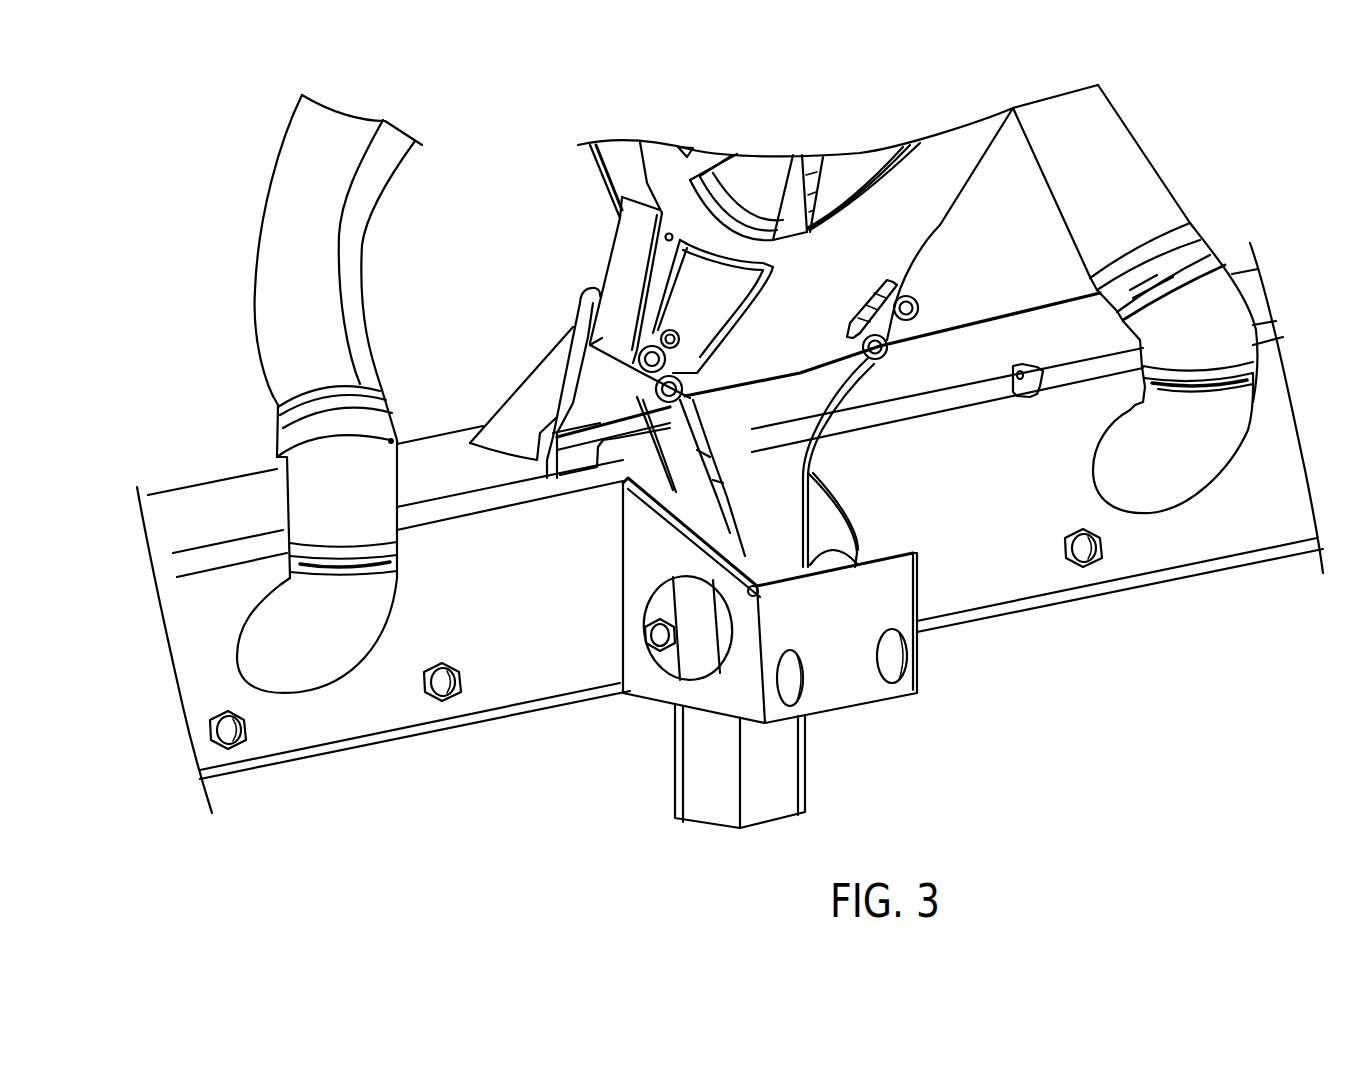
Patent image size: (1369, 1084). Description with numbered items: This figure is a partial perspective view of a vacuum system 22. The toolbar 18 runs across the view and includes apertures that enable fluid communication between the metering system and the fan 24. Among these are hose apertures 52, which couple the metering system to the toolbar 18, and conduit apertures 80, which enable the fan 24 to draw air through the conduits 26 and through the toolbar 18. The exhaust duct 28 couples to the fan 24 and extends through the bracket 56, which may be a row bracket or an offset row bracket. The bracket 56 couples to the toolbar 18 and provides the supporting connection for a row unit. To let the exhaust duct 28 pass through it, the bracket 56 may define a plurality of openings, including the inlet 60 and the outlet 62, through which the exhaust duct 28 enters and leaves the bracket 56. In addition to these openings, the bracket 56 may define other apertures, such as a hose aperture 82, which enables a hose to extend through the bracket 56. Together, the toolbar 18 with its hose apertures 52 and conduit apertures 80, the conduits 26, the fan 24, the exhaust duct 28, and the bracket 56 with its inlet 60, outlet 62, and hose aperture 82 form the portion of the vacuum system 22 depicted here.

The toolbar 18 is at (354, 739).
The vacuum system 22 is at (1120, 723).
The fan 24 is at (624, 232).
The conduits 26 is at (277, 327).
The exhaust duct 28 is at (705, 797).
The hose apertures 52 is at (657, 637).
The bracket 56 is at (983, 703).
The inlet 60 is at (845, 494).
The outlet 62 is at (840, 713).
The conduit apertures 80 is at (237, 633).
The hose aperture 82 is at (785, 703).